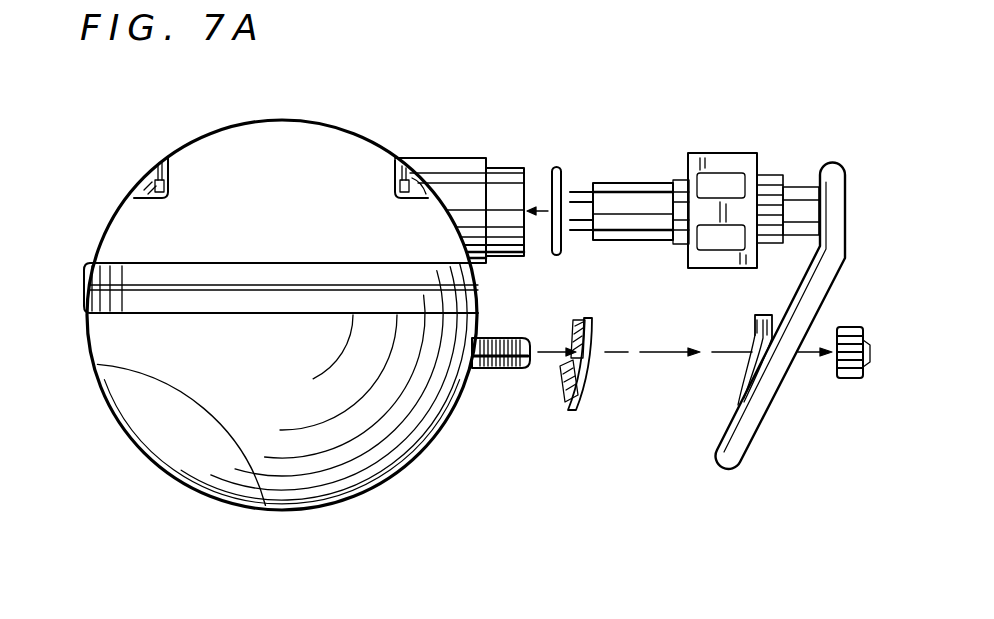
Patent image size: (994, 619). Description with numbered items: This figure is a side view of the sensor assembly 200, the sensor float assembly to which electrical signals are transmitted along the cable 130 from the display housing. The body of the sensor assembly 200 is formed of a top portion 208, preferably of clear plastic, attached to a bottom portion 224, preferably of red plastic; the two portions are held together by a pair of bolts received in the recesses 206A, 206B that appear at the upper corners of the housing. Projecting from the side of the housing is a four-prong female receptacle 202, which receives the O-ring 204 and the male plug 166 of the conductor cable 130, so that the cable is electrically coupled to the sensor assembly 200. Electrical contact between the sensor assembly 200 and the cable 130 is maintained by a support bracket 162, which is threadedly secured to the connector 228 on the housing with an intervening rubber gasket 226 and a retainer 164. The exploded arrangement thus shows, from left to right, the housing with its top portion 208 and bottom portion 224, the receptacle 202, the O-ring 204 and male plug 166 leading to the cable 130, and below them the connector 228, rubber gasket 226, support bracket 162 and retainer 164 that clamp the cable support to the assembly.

The sensor assembly 200 is at (482, 131).
The four-prong female receptacle 202 is at (507, 167).
The O-ring 204 is at (559, 255).
The recess 206A is at (160, 172).
The recess 206B is at (413, 116).
The top portion 208 is at (122, 233).
The cable 130 is at (804, 186).
The support bracket 162 is at (740, 455).
The retainer 164 is at (857, 380).
The male plug 166 is at (689, 172).
The bottom portion 224 is at (138, 430).
The rubber gasket 226 is at (566, 408).
The connector 228 is at (479, 370).